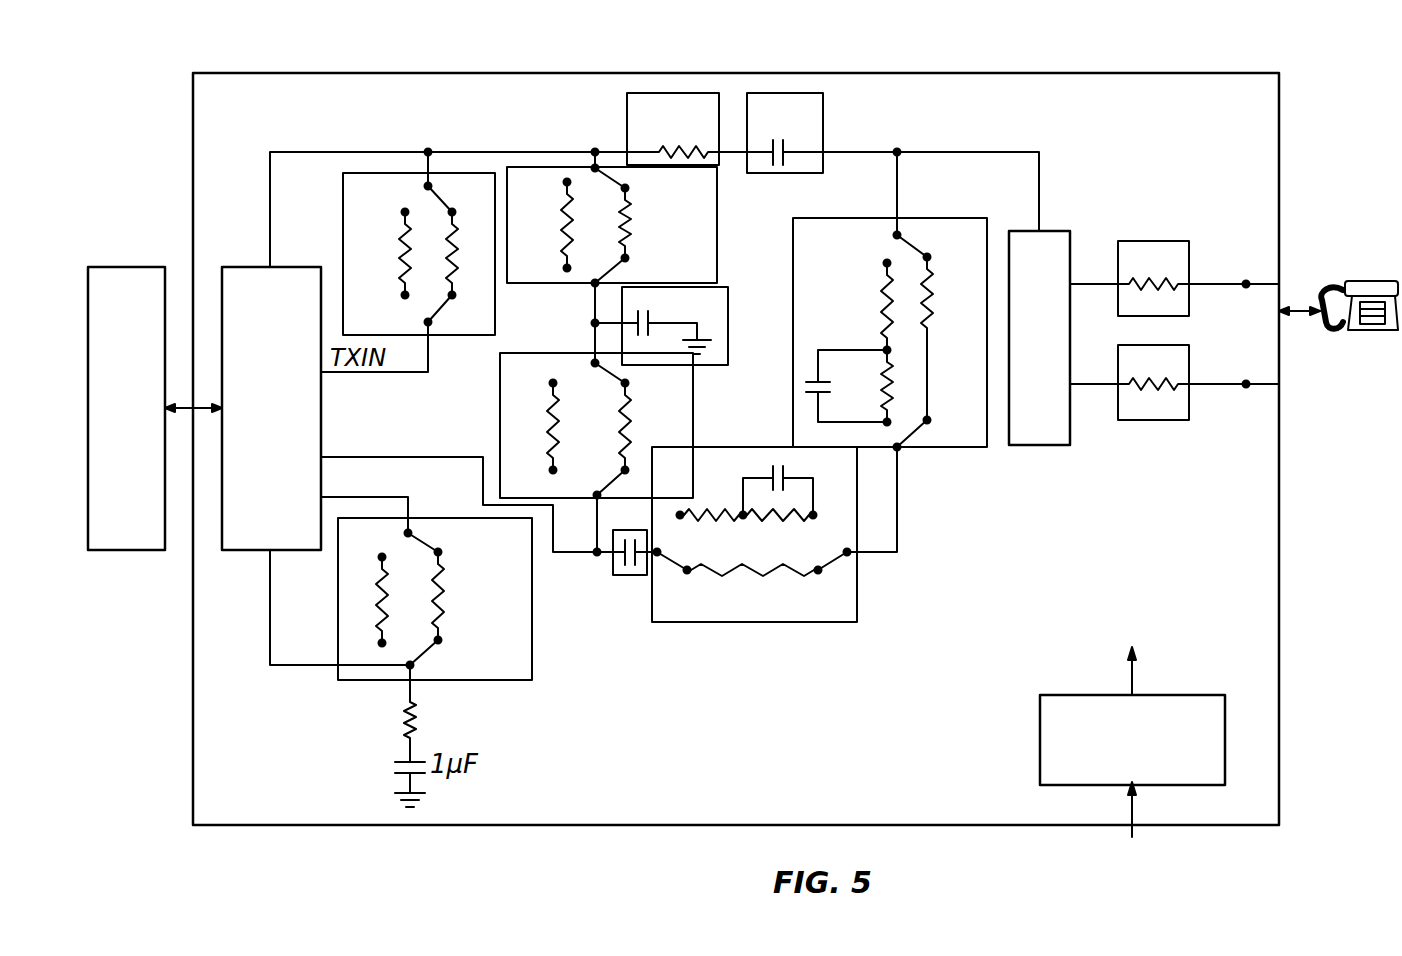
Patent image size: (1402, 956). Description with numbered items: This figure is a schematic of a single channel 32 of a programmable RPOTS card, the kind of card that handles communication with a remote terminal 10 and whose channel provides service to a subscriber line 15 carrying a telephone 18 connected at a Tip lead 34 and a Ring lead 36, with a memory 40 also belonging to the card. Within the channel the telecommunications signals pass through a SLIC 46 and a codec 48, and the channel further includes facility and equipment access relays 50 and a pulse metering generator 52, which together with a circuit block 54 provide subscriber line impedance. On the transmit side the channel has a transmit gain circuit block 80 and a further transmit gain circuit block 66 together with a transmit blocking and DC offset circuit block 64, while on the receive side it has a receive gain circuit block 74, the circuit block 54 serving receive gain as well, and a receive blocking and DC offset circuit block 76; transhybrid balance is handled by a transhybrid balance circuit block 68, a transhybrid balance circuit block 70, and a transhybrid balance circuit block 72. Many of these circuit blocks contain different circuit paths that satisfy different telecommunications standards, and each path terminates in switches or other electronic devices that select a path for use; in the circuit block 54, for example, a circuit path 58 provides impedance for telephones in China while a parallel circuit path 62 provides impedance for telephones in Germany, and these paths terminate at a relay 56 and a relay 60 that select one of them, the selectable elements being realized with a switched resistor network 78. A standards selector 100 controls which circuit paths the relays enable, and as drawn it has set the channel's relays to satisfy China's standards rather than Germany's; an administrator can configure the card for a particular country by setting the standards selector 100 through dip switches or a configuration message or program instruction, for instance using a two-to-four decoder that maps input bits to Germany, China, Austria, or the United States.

The remote terminal 10 is at (120, 267).
The subscriber line 15 is at (1293, 315).
The telephone 18 is at (1372, 280).
The channel 32 is at (920, 73).
The Tip lead 34 is at (1246, 284).
The Ring lead 36 is at (1246, 386).
The memory 40 is at (1153, 334).
The SLIC 46 is at (1050, 231).
The codec 48 is at (258, 267).
The facility and equipment access relays 50 is at (1153, 293).
The pulse metering generator 52 is at (1160, 420).
The circuit block 54 is at (874, 345).
The relay 56 is at (913, 250).
The circuit path 58 is at (927, 395).
The relay 60 is at (927, 426).
The circuit path 62 is at (886, 263).
The transmit blocking and DC offset circuit block 64 is at (775, 93).
The transmit gain circuit block 66 is at (662, 93).
The transhybrid balance circuit block 68 is at (717, 215).
The transhybrid balance circuit block 70 is at (726, 290).
The transhybrid balance circuit block 72 is at (693, 390).
The receive gain circuit block 74 is at (775, 622).
The receive blocking and DC offset circuit block 76 is at (637, 580).
The switched resistor network 78 is at (418, 518).
The transmit gain circuit block 80 is at (378, 173).
The standards selector 100 is at (1210, 695).